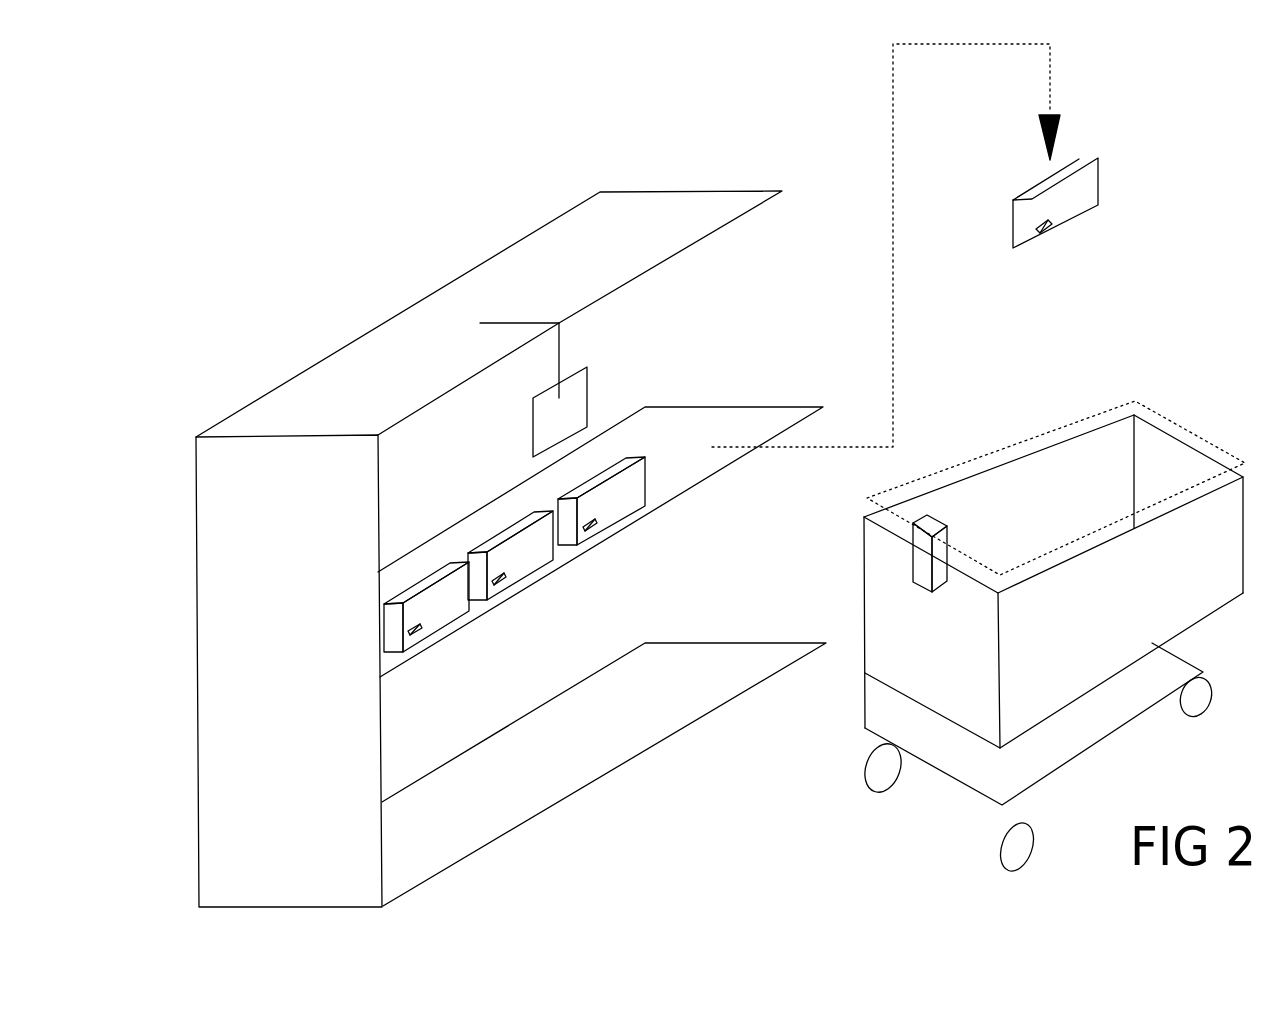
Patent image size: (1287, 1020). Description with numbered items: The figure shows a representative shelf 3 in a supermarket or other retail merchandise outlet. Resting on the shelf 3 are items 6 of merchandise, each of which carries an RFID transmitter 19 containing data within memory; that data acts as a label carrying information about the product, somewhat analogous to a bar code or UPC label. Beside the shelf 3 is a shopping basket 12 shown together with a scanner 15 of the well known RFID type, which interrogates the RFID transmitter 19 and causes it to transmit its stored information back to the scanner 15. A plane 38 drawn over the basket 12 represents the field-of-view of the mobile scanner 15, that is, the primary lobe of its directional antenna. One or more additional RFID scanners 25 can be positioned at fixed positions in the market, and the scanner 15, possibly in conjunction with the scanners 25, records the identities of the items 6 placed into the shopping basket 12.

The shelf 3 is at (313, 638).
The items of merchandise 6 is at (428, 580).
The RFID transmitter 19 is at (414, 636).
The additional RFID scanner 25 is at (587, 397).
The shopping basket 12 is at (1203, 572).
The scanner 15 is at (922, 587).
The plane 38 is at (1035, 410).